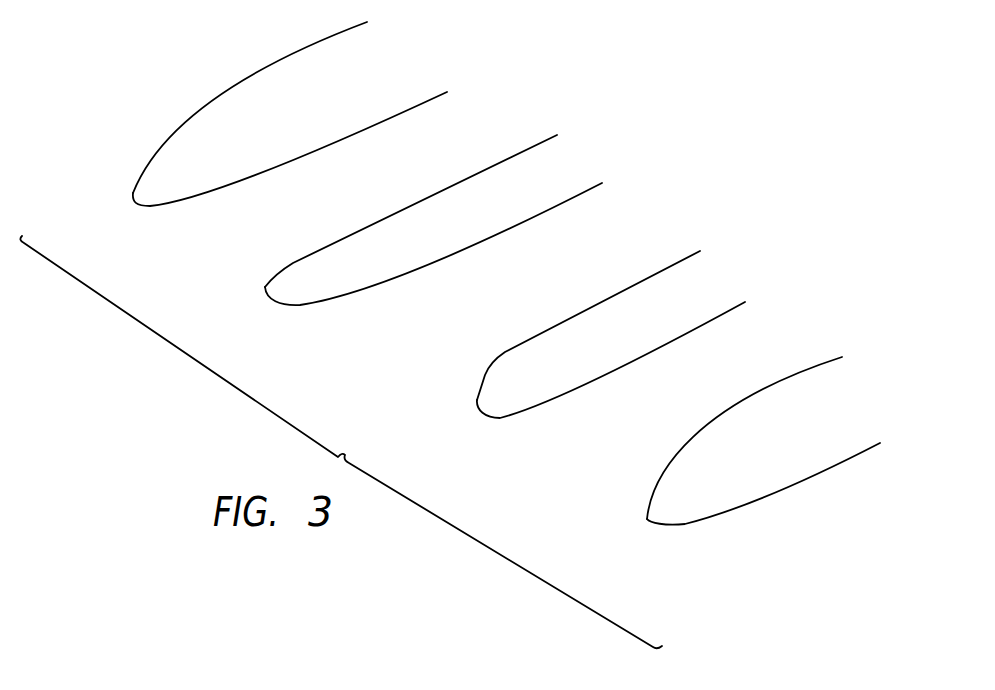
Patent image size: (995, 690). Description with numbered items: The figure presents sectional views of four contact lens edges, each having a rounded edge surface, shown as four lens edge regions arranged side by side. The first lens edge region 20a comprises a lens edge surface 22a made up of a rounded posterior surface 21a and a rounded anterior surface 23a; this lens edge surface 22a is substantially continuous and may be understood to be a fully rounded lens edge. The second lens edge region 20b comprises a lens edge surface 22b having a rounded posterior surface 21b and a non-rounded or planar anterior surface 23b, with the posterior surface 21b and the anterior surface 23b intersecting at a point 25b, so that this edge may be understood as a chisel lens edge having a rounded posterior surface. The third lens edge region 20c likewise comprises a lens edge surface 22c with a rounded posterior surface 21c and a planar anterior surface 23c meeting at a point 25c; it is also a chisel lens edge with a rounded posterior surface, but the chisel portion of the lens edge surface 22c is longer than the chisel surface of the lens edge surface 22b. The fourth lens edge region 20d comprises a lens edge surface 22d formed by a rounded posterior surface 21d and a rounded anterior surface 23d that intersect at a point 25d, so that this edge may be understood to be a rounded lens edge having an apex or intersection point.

The lens edge region 20a is at (170, 123).
The rounded posterior surface 21a is at (153, 207).
The lens edge surface 22a is at (132, 200).
The rounded anterior surface 23a is at (133, 177).
The lens edge region 20b is at (505, 152).
The rounded posterior surface 21b is at (298, 310).
The lens edge surface 22b is at (267, 297).
The planar anterior surface 23b is at (263, 282).
The intersection point 25b is at (263, 290).
The lens edge region 20c is at (652, 265).
The rounded posterior surface 21c is at (500, 418).
The lens edge surface 22c is at (475, 405).
The planar anterior surface 23c is at (487, 370).
The intersection point 25c is at (477, 400).
The lens edge region 20d is at (799, 363).
The rounded posterior surface 21d is at (677, 525).
The lens edge surface 22d is at (643, 517).
The rounded anterior surface 23d is at (655, 490).
The intersection point 25d is at (647, 519).